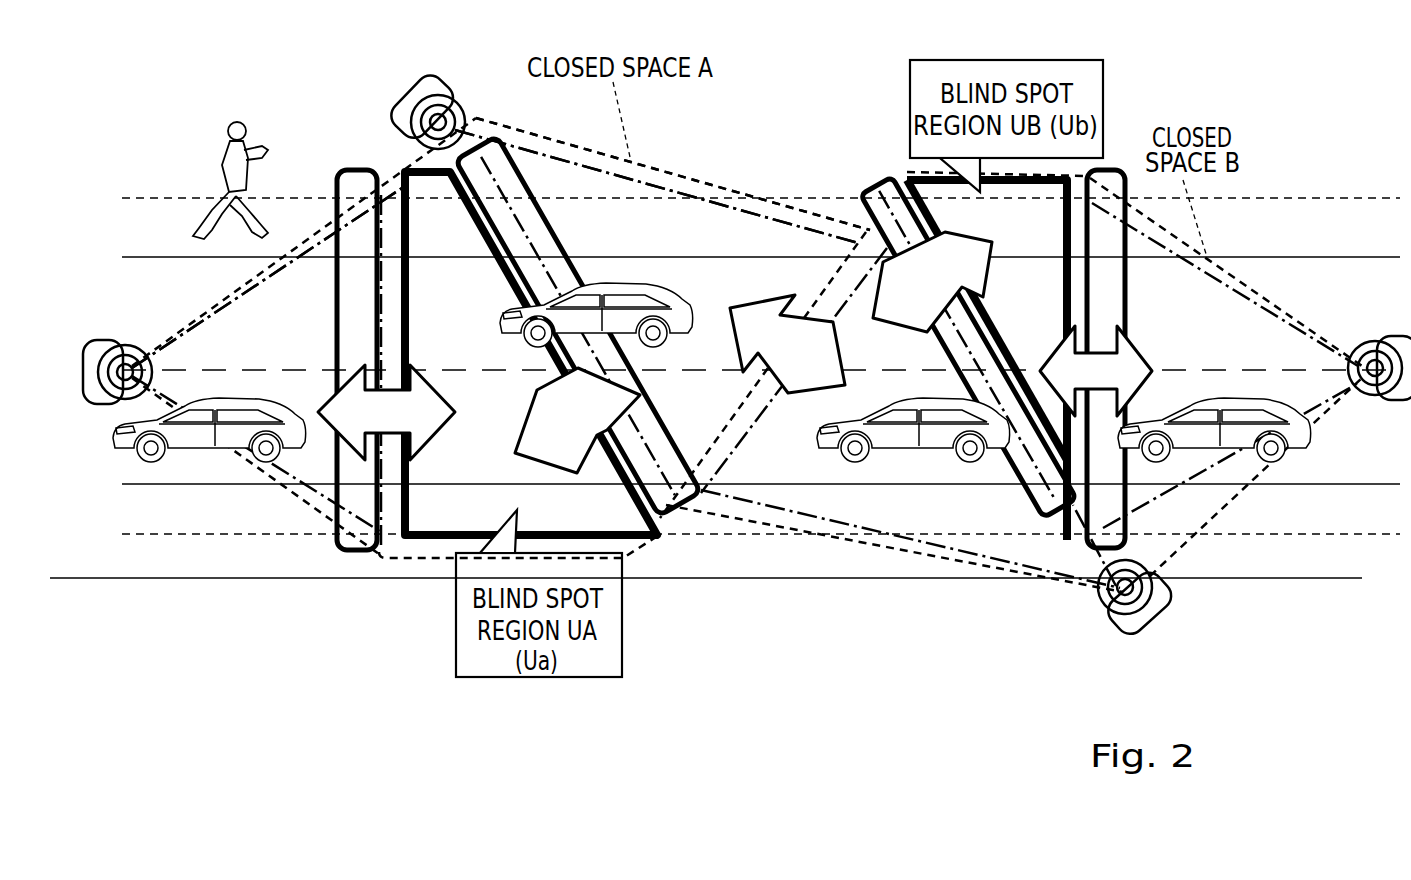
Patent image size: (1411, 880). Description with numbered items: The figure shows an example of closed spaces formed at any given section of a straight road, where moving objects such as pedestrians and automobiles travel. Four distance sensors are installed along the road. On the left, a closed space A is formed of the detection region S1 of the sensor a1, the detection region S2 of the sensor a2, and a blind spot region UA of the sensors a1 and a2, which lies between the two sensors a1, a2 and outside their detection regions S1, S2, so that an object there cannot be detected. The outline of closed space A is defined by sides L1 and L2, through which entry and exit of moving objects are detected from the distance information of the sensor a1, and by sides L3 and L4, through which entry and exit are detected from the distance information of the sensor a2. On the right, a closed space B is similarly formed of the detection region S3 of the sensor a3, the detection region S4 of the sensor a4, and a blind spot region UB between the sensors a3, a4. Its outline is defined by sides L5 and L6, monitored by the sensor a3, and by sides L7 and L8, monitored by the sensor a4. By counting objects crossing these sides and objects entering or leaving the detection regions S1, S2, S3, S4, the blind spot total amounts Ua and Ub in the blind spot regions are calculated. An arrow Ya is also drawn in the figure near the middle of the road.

The sensor a1 is at (124, 338).
The sensor a2 is at (452, 86).
The sensor a3 is at (1175, 607).
The sensor a4 is at (1398, 333).
The side L1 is at (222, 290).
The side L2 is at (253, 467).
The side L3 is at (752, 193).
The side L4 is at (660, 522).
The side L5 is at (845, 540).
The side L6 is at (885, 193).
The side L7 is at (1250, 487).
The side L8 is at (1265, 293).
The detection region S1 is at (185, 322).
The detection region S2 is at (704, 212).
The detection region S3 is at (918, 513).
The detection region S4 is at (1268, 340).
The passage direction arrow Ya is at (787, 344).